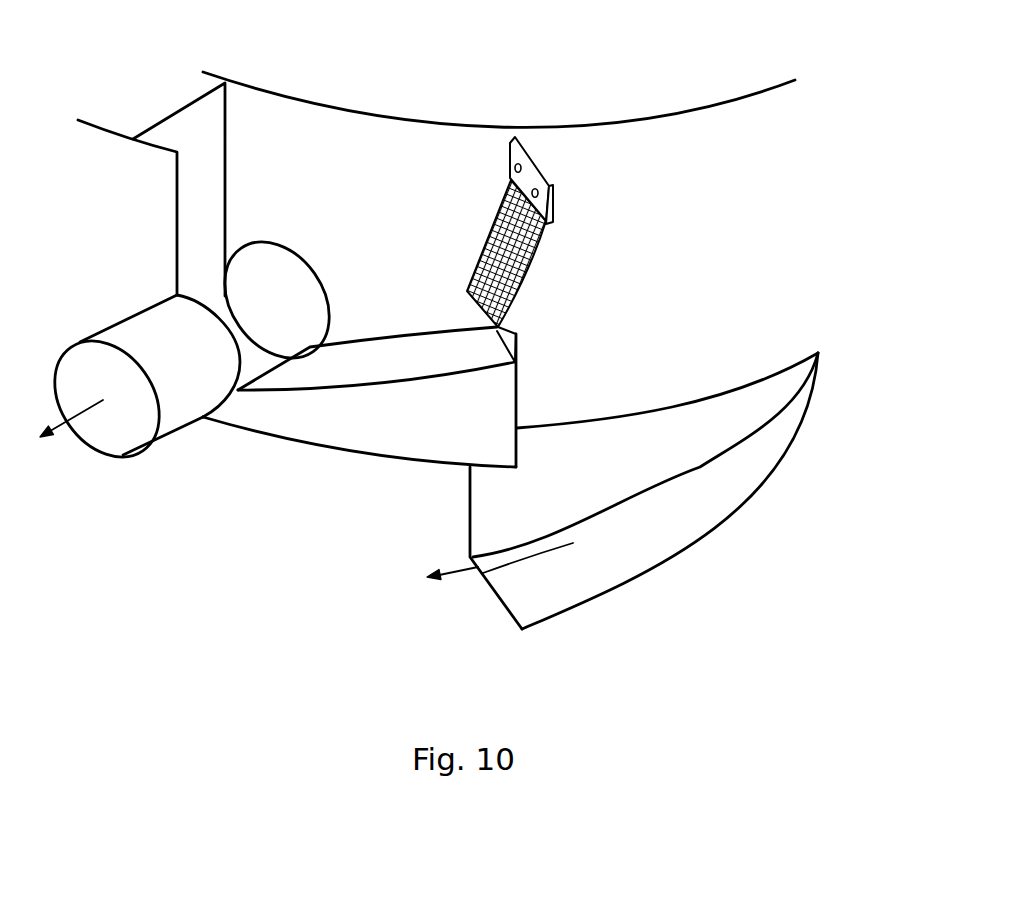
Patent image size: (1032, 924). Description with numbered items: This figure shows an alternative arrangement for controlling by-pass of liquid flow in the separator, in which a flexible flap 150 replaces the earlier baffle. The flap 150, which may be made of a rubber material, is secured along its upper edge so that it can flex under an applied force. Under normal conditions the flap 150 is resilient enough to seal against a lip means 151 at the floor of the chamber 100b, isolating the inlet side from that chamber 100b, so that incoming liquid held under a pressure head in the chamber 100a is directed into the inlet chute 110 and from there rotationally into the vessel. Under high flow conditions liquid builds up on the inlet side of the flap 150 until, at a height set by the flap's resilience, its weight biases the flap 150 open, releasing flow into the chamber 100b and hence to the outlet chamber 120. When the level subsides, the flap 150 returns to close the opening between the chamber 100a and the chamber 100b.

The chamber 100a is at (688, 170).
The chamber 100b is at (418, 215).
The inlet chute 110 is at (658, 517).
The chamber (outlet) 120 is at (177, 402).
The flexible flap 150 is at (528, 275).
The lip means 151 is at (518, 338).